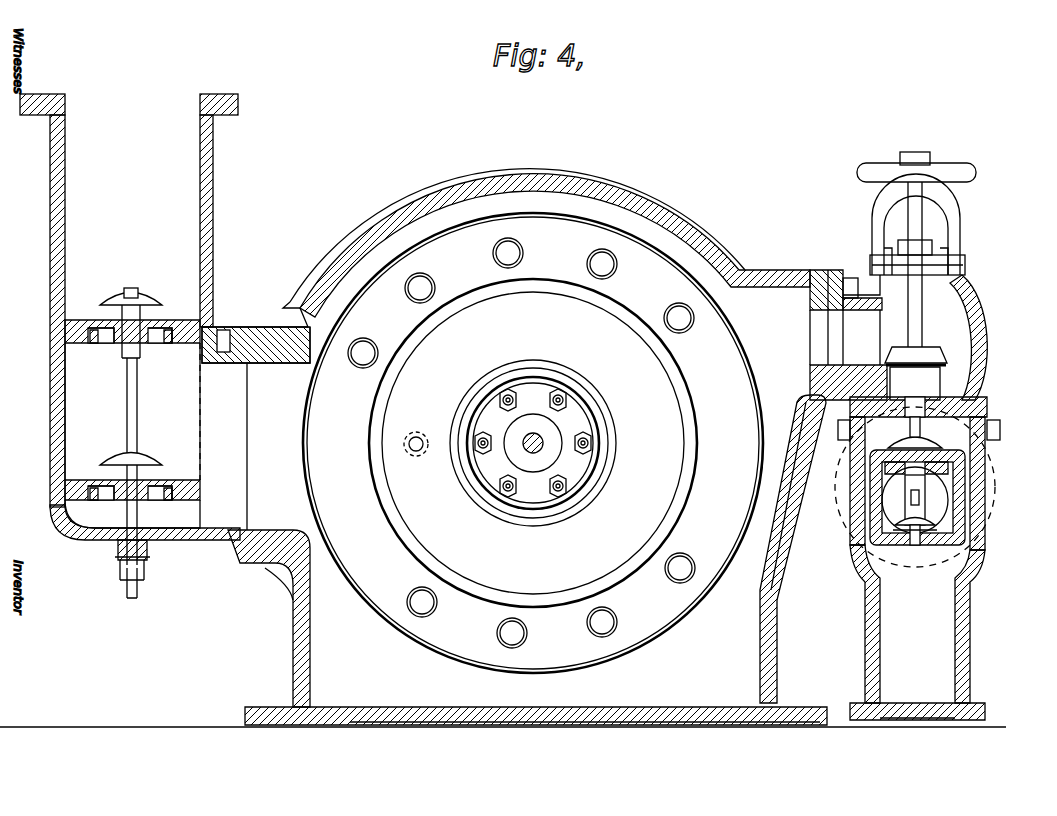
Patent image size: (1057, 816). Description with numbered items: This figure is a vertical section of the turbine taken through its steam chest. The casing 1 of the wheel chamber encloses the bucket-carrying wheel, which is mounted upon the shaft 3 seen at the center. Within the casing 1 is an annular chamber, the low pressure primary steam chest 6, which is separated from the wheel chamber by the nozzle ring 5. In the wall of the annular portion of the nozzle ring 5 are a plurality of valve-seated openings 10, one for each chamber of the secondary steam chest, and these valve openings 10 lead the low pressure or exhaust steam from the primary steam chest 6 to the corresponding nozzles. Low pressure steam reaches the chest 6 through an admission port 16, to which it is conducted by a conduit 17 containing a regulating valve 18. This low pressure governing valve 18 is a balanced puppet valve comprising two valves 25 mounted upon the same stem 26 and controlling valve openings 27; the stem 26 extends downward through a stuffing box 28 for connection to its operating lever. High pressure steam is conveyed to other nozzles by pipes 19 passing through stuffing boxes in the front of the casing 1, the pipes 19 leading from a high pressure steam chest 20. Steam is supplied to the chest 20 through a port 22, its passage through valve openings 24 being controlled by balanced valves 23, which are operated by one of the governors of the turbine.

The casing 1 is at (438, 190).
The shaft 3 is at (540, 440).
The nozzle ring 5 is at (672, 277).
The low pressure primary steam chest 6 is at (352, 270).
The valve-seated openings 10 is at (404, 298).
The admission port 16 is at (247, 463).
The conduit 17 is at (247, 427).
The regulating valve 18 is at (127, 317).
The pipes 19 is at (495, 634).
The high pressure steam chest 20 is at (885, 632).
The port 22 is at (940, 507).
The balanced valves 23 is at (952, 445).
The valve openings 24 is at (898, 468).
The valves 25 is at (148, 300).
The stem 26 is at (136, 378).
The valve openings 27 is at (108, 347).
The stuffing box 28 is at (117, 562).